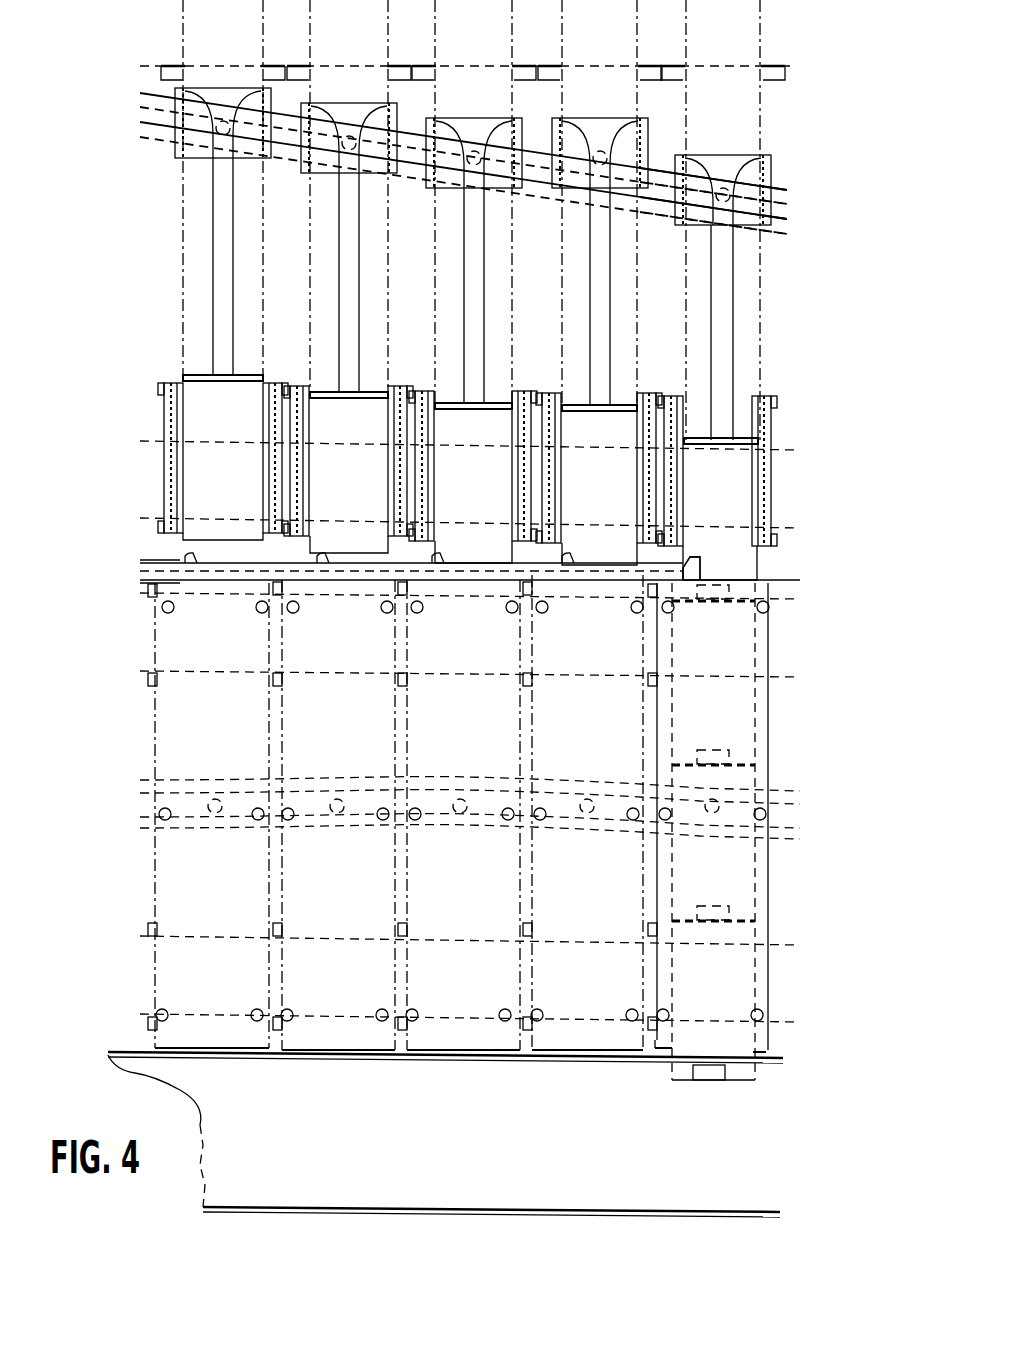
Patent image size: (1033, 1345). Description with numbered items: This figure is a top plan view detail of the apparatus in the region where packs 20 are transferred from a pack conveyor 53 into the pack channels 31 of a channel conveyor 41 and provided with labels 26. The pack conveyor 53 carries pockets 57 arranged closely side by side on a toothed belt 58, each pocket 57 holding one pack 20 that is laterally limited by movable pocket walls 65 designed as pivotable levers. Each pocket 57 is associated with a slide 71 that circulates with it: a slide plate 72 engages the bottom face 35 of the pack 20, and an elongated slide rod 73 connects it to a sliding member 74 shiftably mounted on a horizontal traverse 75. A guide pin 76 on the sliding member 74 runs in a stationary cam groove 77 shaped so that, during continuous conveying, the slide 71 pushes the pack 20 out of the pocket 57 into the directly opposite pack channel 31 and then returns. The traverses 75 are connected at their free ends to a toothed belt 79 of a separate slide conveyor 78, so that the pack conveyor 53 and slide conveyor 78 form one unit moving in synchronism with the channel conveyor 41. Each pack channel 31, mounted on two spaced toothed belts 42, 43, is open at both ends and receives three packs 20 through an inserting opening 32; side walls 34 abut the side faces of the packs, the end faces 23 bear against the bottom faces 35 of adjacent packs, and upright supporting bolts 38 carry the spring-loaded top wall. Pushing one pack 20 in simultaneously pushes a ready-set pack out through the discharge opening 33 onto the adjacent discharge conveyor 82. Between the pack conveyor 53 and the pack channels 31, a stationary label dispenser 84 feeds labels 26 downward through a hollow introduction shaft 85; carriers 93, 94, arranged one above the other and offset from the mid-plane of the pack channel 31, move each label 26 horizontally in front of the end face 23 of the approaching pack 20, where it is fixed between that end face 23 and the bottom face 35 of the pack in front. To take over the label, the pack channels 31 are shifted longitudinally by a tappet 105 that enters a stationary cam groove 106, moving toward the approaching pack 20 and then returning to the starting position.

The pack 20 is at (765, 550).
The end face 23 is at (737, 758).
The label 26 is at (712, 1073).
The pack channel 31 is at (148, 723).
The inserting opening 32 is at (762, 598).
The discharge opening 33 is at (768, 1057).
The side wall 34 is at (762, 713).
The bottom face 35 is at (742, 765).
The supporting bolt 38 is at (160, 1017).
The channel conveyor 41 is at (106, 874).
The toothed belt 42 is at (150, 600).
The toothed belt 43 is at (152, 941).
The pack conveyor 53 is at (150, 509).
The pocket 57 is at (178, 548).
The toothed belt 58 is at (165, 458).
The pocket wall 65 is at (163, 394).
The slide 71 is at (210, 282).
The slide plate 72 is at (733, 437).
The slide rod 73 is at (727, 261).
The sliding member 74 is at (770, 155).
The traverse 75 is at (185, 229).
The guide pin 76 is at (185, 125).
The cam groove 77 is at (780, 206).
The slide conveyor 78 is at (135, 92).
The toothed belt 79 is at (150, 22).
The discharge conveyor 82 is at (266, 1121).
The label dispenser 84 is at (260, 589).
The introduction shaft 85 is at (152, 564).
The carrier 93 is at (702, 577).
The carrier 94 is at (691, 568).
The tappet 105 is at (217, 801).
The cam groove 106 is at (784, 815).